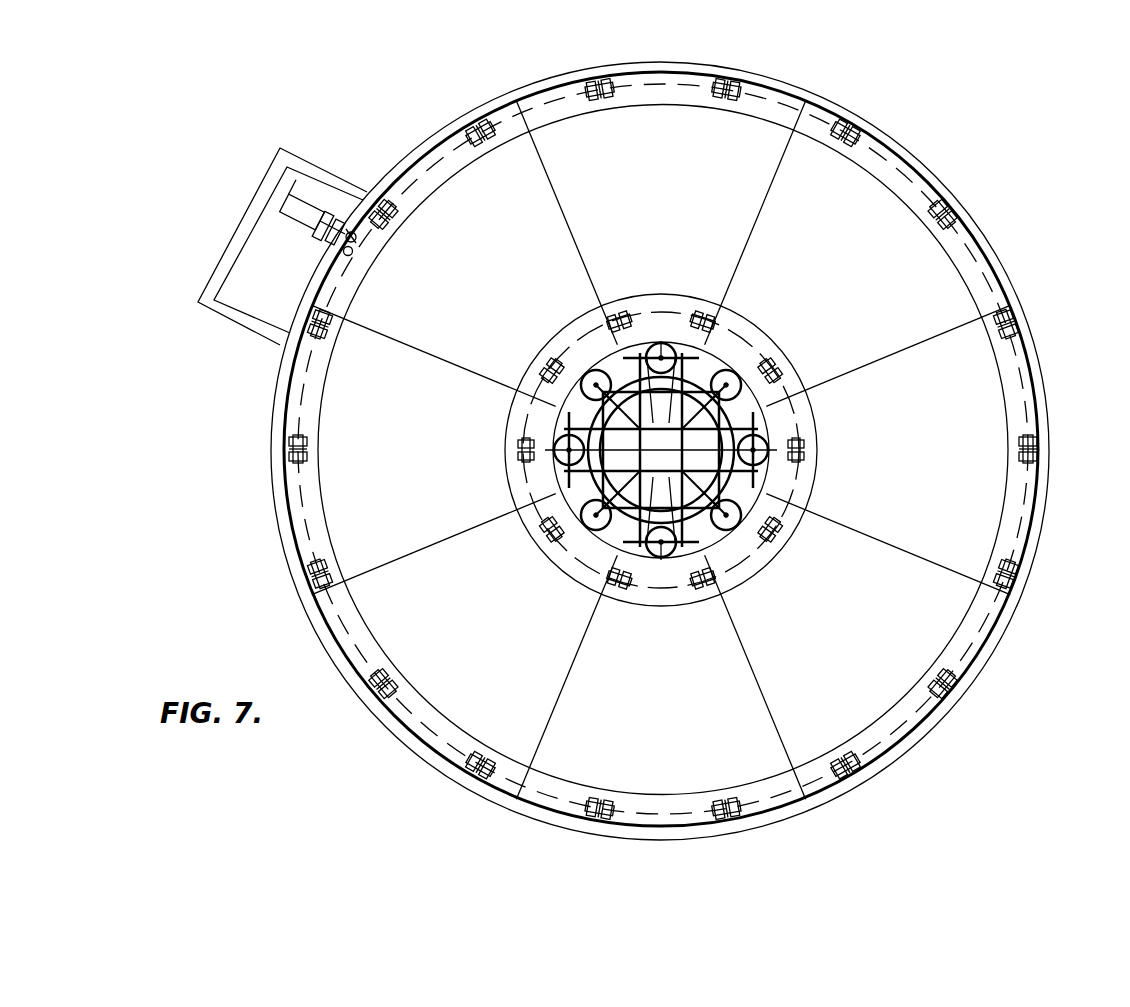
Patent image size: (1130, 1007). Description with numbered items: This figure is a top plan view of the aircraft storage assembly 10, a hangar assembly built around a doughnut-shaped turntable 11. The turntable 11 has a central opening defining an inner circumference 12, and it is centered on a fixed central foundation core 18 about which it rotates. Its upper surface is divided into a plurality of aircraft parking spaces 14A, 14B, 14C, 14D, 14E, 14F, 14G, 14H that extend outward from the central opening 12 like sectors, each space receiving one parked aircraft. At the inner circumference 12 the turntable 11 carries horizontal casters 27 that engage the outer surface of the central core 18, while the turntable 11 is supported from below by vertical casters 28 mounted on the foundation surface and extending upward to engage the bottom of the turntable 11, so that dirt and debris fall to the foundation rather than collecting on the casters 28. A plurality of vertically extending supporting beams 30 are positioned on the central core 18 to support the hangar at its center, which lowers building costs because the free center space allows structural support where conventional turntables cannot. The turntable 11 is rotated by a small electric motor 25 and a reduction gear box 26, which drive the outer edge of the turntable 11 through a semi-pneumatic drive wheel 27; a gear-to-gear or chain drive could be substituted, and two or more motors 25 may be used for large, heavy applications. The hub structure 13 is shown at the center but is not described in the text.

The aircraft storage assembly 10 is at (190, 169).
The turntable 11 is at (742, 160).
The inner circumference 12 is at (575, 493).
The hub support structure 13 is at (583, 565).
The aircraft parking space 14A is at (596, 236).
The aircraft parking space 14B is at (461, 282).
The aircraft parking space 14C is at (371, 504).
The aircraft parking space 14D is at (468, 642).
The aircraft parking space 14E is at (673, 699).
The aircraft parking space 14F is at (811, 642).
The aircraft parking space 14G is at (878, 424).
The aircraft parking space 14H is at (789, 284).
The central foundation core 18 is at (718, 577).
The electric motor 25 is at (293, 190).
The reduction gear box 26 is at (333, 212).
The semi-pneumatic drive wheel 27 is at (357, 231).
The vertical casters 28 is at (590, 88).
The supporting beams 30 is at (661, 341).